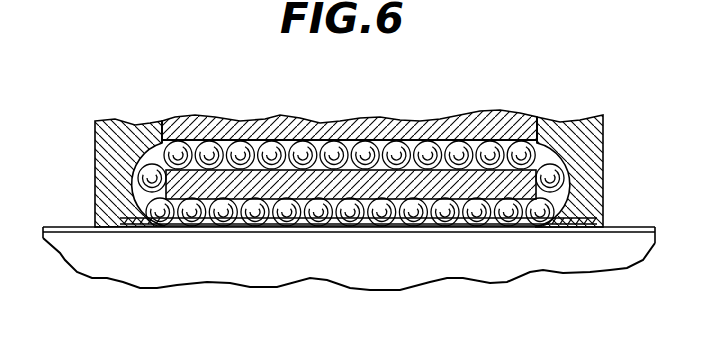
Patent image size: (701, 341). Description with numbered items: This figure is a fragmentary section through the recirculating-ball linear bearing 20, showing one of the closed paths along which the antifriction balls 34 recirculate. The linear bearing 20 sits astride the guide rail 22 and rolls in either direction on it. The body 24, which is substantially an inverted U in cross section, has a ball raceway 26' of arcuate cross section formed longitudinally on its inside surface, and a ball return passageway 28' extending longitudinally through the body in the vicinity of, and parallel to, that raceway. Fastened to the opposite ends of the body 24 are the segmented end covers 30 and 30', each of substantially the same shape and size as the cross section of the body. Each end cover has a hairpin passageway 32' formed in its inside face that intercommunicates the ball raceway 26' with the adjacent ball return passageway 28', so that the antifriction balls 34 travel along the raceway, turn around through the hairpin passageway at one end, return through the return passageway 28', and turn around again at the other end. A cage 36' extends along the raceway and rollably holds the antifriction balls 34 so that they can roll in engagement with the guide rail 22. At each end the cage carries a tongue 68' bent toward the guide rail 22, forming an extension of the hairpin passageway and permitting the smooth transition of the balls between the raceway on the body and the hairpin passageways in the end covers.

The linear bearing 20 is at (598, 105).
The guide rail 22 is at (312, 267).
The body 24 is at (355, 128).
The ball raceway 26' is at (351, 130).
The ball return passageway 28' is at (349, 103).
The end cover 30 is at (130, 147).
The end cover 30' is at (569, 142).
The hairpin passageway 32' is at (351, 104).
The antifriction balls 34 is at (308, 148).
The cage 36' is at (349, 267).
The tongue 68' is at (353, 277).